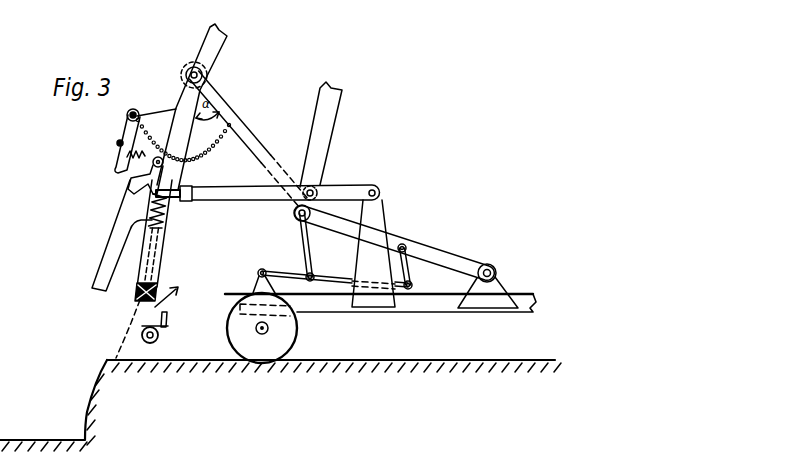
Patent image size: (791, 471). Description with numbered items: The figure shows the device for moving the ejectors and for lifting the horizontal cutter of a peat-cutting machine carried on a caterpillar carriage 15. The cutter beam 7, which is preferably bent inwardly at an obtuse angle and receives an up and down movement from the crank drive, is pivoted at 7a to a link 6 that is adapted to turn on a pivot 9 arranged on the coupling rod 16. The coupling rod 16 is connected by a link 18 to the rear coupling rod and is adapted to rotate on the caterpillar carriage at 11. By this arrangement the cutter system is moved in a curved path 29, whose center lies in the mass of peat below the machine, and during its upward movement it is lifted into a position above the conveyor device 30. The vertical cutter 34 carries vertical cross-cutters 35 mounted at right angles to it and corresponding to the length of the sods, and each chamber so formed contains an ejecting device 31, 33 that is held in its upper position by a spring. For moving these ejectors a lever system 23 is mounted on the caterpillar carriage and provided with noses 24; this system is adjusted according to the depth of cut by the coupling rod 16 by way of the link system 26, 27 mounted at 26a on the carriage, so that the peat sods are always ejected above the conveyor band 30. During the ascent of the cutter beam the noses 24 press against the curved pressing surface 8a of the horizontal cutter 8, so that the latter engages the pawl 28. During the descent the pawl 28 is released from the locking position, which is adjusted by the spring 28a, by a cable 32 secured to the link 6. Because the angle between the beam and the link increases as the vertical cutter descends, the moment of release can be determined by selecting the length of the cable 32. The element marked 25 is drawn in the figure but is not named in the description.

The link 6 is at (257, 148).
The cutter beam 7 is at (202, 42).
The pivot of cutter beam 7a is at (187, 76).
The horizontal cutter 8 is at (112, 238).
The curved pressing surface 8a is at (156, 193).
The pivot 9 is at (295, 216).
The pivot on caterpillar carriage 11 is at (498, 276).
The caterpillar carriage 15 is at (286, 337).
The coupling rod 16 is at (428, 251).
The link 18 is at (326, 143).
The lever system 23 is at (248, 200).
The noses 24 is at (172, 199).
The link 25 is at (412, 272).
The link of link system 26 is at (325, 280).
The mounting point of link system 26a is at (246, 282).
The link of link system 27 is at (308, 255).
The pawl 28 is at (128, 179).
The spring 28a is at (114, 163).
The curved path 29 is at (122, 340).
The conveyor device 30 is at (160, 328).
The ejecting device 31 is at (166, 250).
The cable 32 is at (184, 146).
The ejecting device 33 is at (140, 295).
The vertical cutter 34 is at (172, 303).
The vertical cross-cutters 35 is at (156, 300).